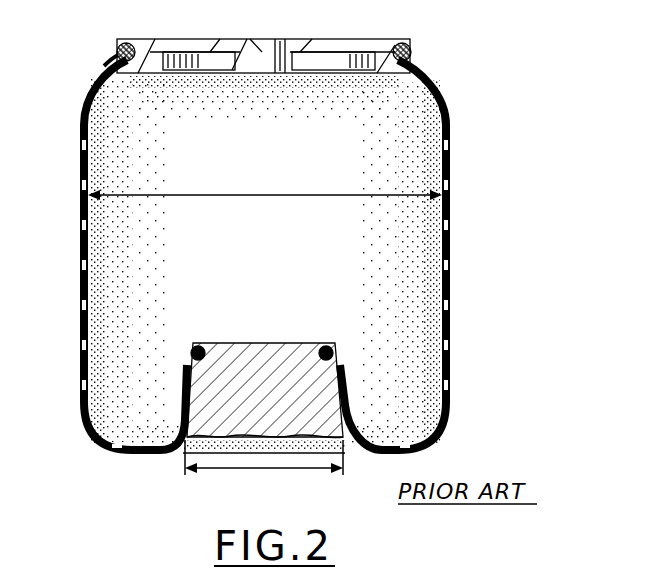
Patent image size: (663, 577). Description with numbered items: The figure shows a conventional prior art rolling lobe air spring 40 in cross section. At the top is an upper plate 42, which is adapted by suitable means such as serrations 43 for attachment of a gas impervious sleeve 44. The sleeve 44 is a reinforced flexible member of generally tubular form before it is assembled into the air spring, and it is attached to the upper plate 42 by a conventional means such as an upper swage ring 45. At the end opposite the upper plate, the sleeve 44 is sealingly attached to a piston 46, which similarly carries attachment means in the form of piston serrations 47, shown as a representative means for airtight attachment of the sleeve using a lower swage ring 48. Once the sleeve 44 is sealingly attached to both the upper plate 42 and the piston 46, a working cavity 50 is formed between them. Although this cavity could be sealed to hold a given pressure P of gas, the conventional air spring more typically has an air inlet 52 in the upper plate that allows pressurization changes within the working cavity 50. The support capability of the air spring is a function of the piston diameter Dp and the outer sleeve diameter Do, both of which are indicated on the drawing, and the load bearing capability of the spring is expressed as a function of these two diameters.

The conventional air spring 40 is at (466, 88).
The upper plate 42 is at (156, 44).
The serrations 43 is at (130, 44).
The gas impervious sleeve 44 is at (80, 118).
The upper swage ring 45 is at (114, 56).
The piston 46 is at (176, 442).
The piston serrations 47 is at (221, 343).
The lower swage ring 48 is at (190, 360).
The working cavity 50 is at (430, 276).
The air inlet 52 is at (286, 42).
The pressure P is at (333, 150).
The outer sleeve diameter Do is at (278, 196).
The piston diameter Dp is at (272, 474).